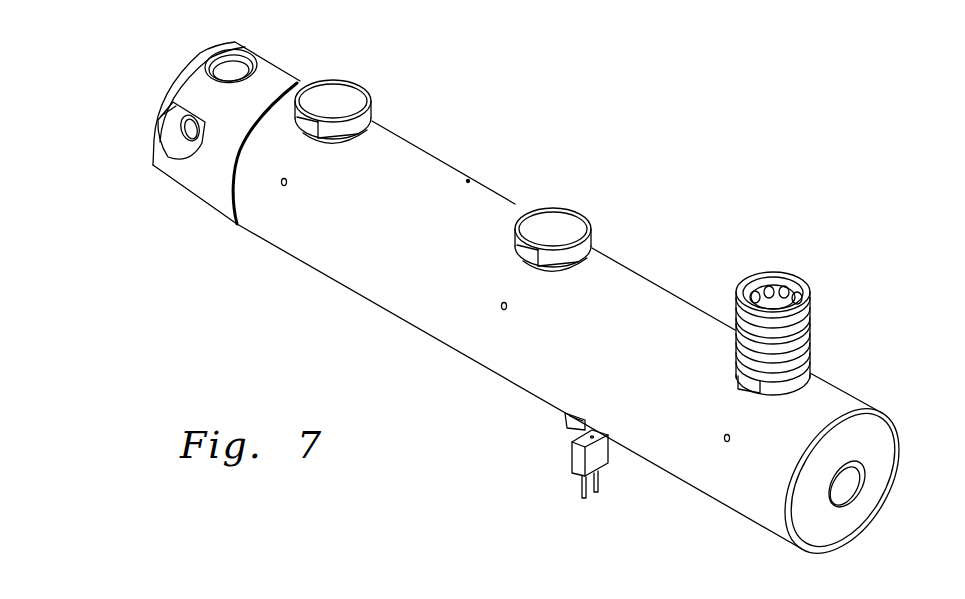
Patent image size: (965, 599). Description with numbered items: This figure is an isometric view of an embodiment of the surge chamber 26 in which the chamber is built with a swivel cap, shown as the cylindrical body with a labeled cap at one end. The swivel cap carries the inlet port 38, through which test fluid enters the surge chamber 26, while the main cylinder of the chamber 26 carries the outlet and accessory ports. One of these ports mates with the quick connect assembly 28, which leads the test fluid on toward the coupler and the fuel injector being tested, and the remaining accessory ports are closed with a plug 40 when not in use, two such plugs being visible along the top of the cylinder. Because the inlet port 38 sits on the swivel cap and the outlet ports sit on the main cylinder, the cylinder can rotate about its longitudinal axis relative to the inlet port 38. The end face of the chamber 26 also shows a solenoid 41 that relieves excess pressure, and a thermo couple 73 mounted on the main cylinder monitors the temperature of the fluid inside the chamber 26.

The surge chamber 26 is at (436, 177).
The quick connect assembly 28 is at (810, 288).
The inlet port 38 is at (252, 60).
The plug 40 is at (366, 95).
The solenoid valve 41 is at (850, 488).
The thermo couple 73 is at (572, 456).